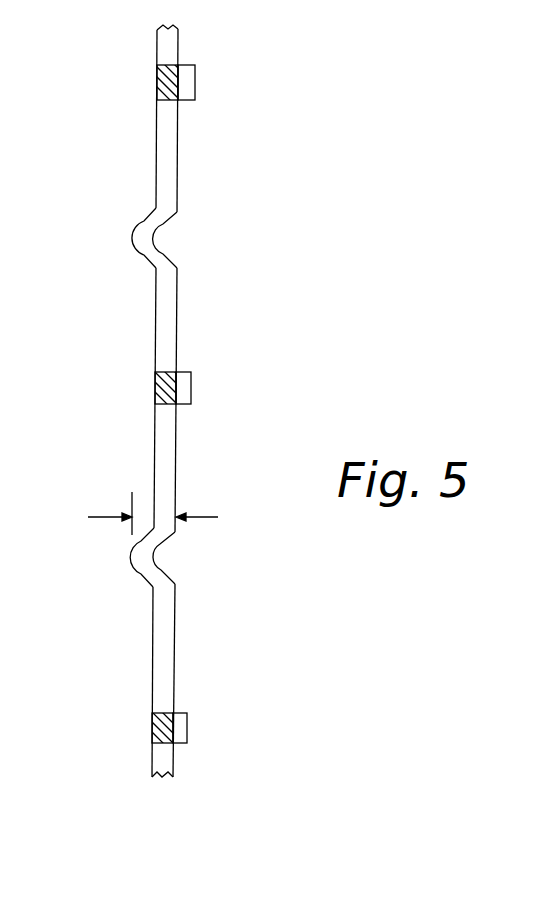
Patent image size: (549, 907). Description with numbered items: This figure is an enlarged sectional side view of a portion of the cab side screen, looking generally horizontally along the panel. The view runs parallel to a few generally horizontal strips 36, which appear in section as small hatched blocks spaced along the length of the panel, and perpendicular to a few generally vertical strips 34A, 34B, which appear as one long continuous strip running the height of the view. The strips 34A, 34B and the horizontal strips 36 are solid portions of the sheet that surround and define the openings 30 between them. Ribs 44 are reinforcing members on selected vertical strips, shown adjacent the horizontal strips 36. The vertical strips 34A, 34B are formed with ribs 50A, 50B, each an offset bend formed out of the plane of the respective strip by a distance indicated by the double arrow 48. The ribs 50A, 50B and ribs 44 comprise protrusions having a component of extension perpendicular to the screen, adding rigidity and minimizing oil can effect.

The opening 30 is at (162, 401).
The vertical strip 34A is at (162, 181).
The vertical strip 34B is at (163, 632).
The horizontal strip 36 is at (158, 82).
The rib 44 is at (195, 67).
The double arrow 48 is at (177, 525).
The rib 50A is at (142, 251).
The rib 50B is at (136, 571).